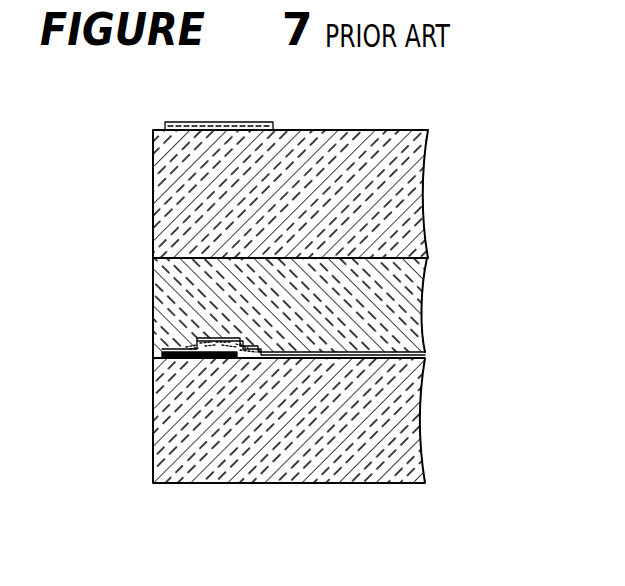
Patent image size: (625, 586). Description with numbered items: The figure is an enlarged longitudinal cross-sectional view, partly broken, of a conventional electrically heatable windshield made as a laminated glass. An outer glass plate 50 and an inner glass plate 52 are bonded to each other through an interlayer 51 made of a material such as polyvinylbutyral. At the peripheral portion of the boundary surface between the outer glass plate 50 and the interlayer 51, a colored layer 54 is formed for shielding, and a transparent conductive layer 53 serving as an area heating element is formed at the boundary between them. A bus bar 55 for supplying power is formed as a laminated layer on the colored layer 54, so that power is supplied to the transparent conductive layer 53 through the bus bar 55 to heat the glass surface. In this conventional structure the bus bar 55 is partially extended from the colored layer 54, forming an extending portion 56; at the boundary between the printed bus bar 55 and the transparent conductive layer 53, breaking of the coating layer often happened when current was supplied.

The outer glass plate 50 is at (398, 418).
The interlayer 51 is at (398, 294).
The inner glass plate 52 is at (418, 193).
The transparent conductive layer 53 is at (382, 357).
The colored layer 54 is at (222, 122).
The bus bar 55 is at (192, 343).
The extending portion 56 is at (240, 357).